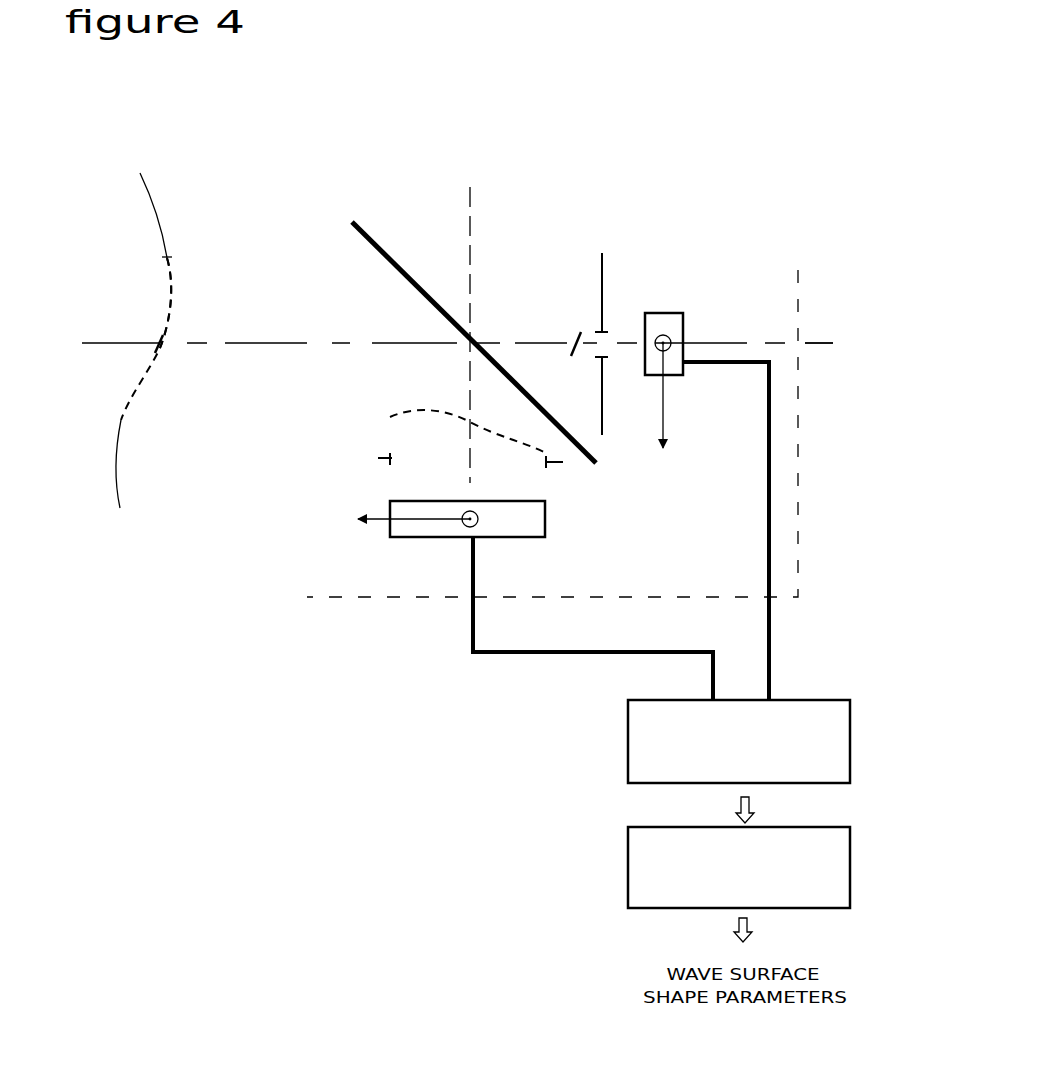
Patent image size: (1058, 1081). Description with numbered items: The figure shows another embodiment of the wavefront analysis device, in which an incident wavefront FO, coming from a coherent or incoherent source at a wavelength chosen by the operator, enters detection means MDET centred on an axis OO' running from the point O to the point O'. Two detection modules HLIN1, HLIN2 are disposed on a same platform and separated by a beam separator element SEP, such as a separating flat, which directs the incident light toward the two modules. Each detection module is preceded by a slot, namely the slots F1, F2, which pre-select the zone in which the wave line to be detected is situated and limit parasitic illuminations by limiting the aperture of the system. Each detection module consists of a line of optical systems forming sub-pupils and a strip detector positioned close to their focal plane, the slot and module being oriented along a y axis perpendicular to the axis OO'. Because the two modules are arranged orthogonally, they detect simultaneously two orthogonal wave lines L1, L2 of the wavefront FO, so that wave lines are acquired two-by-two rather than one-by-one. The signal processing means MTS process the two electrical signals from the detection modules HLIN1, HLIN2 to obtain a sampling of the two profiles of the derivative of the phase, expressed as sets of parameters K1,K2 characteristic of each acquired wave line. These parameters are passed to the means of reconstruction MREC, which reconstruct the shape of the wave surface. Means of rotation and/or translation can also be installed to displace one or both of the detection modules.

The incident wavefront FO is at (152, 202).
The first wave line L1 is at (160, 337).
The second wave line L2 is at (170, 285).
The axis origin point O is at (450, 353).
The axis end point O' is at (821, 357).
The beam separator element SEP is at (372, 235).
The first slot F1 is at (597, 258).
The second slot F2 is at (385, 458).
The first detection module HLIN1 is at (670, 310).
The second detection module HLIN2 is at (530, 537).
The detection means MDET is at (798, 567).
The signal processing means MTS is at (852, 748).
The sets of parameters K1,K2 is at (770, 810).
The means of reconstruction MREC is at (853, 875).